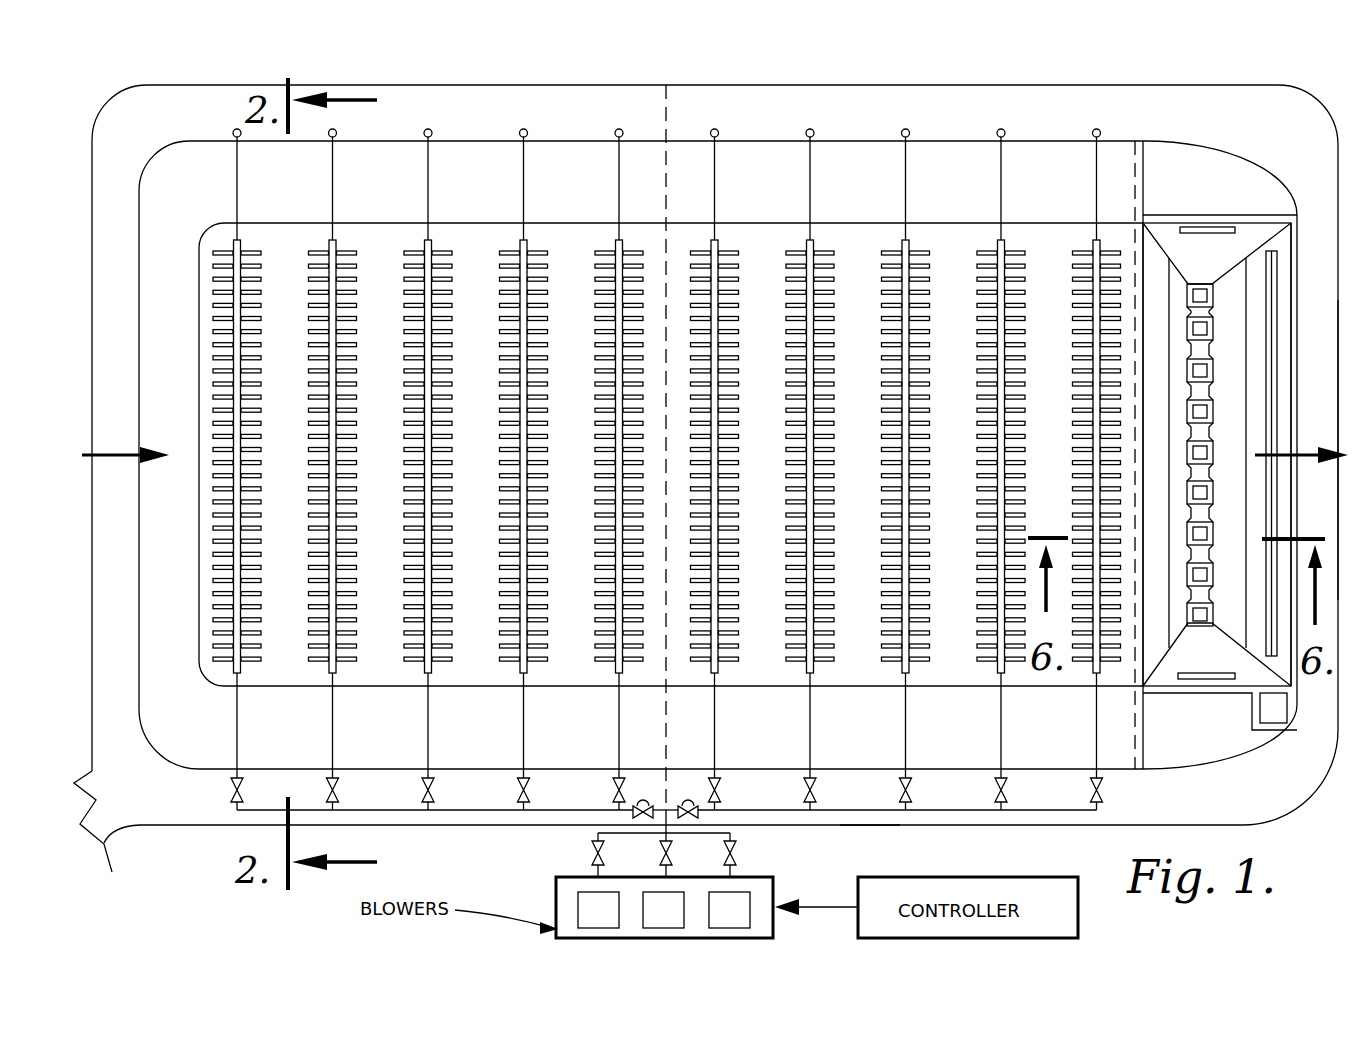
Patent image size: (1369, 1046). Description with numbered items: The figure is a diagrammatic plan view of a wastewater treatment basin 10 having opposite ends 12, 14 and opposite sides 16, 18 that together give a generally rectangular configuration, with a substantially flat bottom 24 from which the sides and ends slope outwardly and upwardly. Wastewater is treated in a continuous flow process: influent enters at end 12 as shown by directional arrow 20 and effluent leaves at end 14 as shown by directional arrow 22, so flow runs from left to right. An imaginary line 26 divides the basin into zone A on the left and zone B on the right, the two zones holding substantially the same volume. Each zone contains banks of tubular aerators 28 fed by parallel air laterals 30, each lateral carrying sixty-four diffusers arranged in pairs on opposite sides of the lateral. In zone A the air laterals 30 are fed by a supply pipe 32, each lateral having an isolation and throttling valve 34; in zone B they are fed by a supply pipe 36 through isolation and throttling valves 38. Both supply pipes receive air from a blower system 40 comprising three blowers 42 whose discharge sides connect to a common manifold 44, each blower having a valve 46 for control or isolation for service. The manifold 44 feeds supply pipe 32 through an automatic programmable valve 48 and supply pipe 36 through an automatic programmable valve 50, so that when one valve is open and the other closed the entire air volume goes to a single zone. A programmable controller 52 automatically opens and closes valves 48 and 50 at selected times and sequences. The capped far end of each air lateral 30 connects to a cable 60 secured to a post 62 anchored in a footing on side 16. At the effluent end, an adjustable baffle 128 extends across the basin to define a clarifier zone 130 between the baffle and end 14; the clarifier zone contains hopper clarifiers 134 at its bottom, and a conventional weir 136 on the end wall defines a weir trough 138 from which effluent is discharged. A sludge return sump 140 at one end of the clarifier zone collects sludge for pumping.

The wastewater treatment basin 10 is at (1304, 826).
The end 12 is at (115, 220).
The end 14 is at (1317, 352).
The side 16 is at (1058, 112).
The side 18 is at (838, 822).
The directional arrow 20 is at (118, 455).
The directional arrow 22 is at (1312, 452).
The bottom 24 is at (683, 452).
The imaginary line 26 is at (670, 122).
The tubular aerators 28 is at (314, 262).
The air laterals 30 is at (240, 342).
The supply pipe 32 is at (445, 810).
The isolation and throttling valve 34 is at (242, 782).
The supply pipe 36 is at (926, 810).
The isolation and throttling valve 38 is at (721, 797).
The blower system 40 is at (785, 886).
The blowers 42 is at (655, 905).
The common manifold 44 is at (713, 836).
The valve 46 is at (776, 856).
The automatic programmable valve 48 is at (654, 802).
The automatic programmable valve 50 is at (676, 802).
The programmable controller 52 is at (962, 878).
The cable 60 is at (237, 205).
The post 62 is at (235, 130).
The adjustable baffle 128 is at (1150, 272).
The clarifier zone 130 is at (1258, 418).
The hopper clarifiers 134 is at (1214, 540).
The weir 136 is at (1273, 290).
The weir trough 138 is at (1283, 236).
The sludge return sump 140 is at (1290, 732).